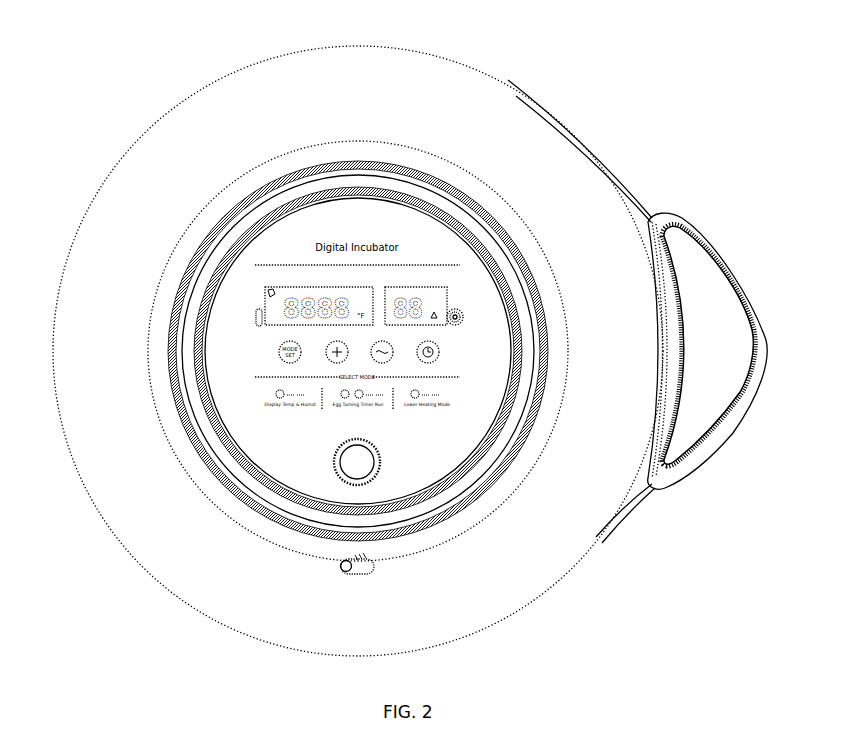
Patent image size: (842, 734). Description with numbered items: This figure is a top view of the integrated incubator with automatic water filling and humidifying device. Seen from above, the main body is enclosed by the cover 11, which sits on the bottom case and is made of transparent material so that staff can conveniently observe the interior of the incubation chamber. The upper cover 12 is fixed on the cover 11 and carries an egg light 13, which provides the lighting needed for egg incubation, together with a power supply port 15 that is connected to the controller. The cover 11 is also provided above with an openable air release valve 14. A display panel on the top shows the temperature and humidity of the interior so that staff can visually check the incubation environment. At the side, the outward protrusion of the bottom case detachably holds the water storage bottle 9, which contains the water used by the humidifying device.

The water storage bottle 9 is at (702, 398).
The cover 11 is at (135, 510).
The upper cover 12 is at (238, 277).
The egg light 13 is at (362, 470).
The air release valve 14 is at (366, 571).
The power supply port 15 is at (461, 310).